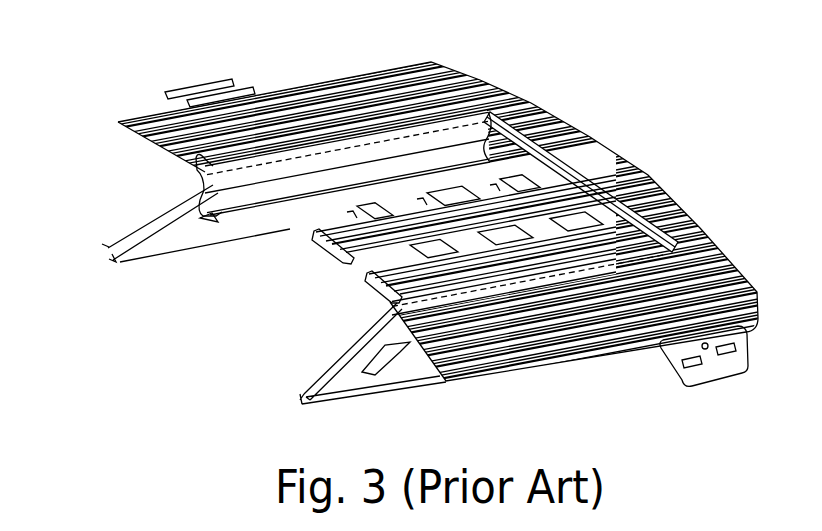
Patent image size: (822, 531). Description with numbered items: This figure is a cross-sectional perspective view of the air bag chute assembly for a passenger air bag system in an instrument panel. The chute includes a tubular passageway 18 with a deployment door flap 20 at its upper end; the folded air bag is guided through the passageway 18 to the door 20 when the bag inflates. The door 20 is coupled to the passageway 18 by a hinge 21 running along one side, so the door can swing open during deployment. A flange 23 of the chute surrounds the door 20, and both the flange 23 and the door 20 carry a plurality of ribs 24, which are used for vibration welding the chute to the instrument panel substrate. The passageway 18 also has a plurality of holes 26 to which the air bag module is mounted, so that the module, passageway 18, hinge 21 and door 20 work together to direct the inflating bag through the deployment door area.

The tubular passageway 18 is at (157, 220).
The deployment door flap 20 is at (316, 247).
The hinge 21 is at (247, 213).
The flange 23 is at (406, 225).
The ribs 24 is at (481, 78).
The holes 26 is at (381, 358).